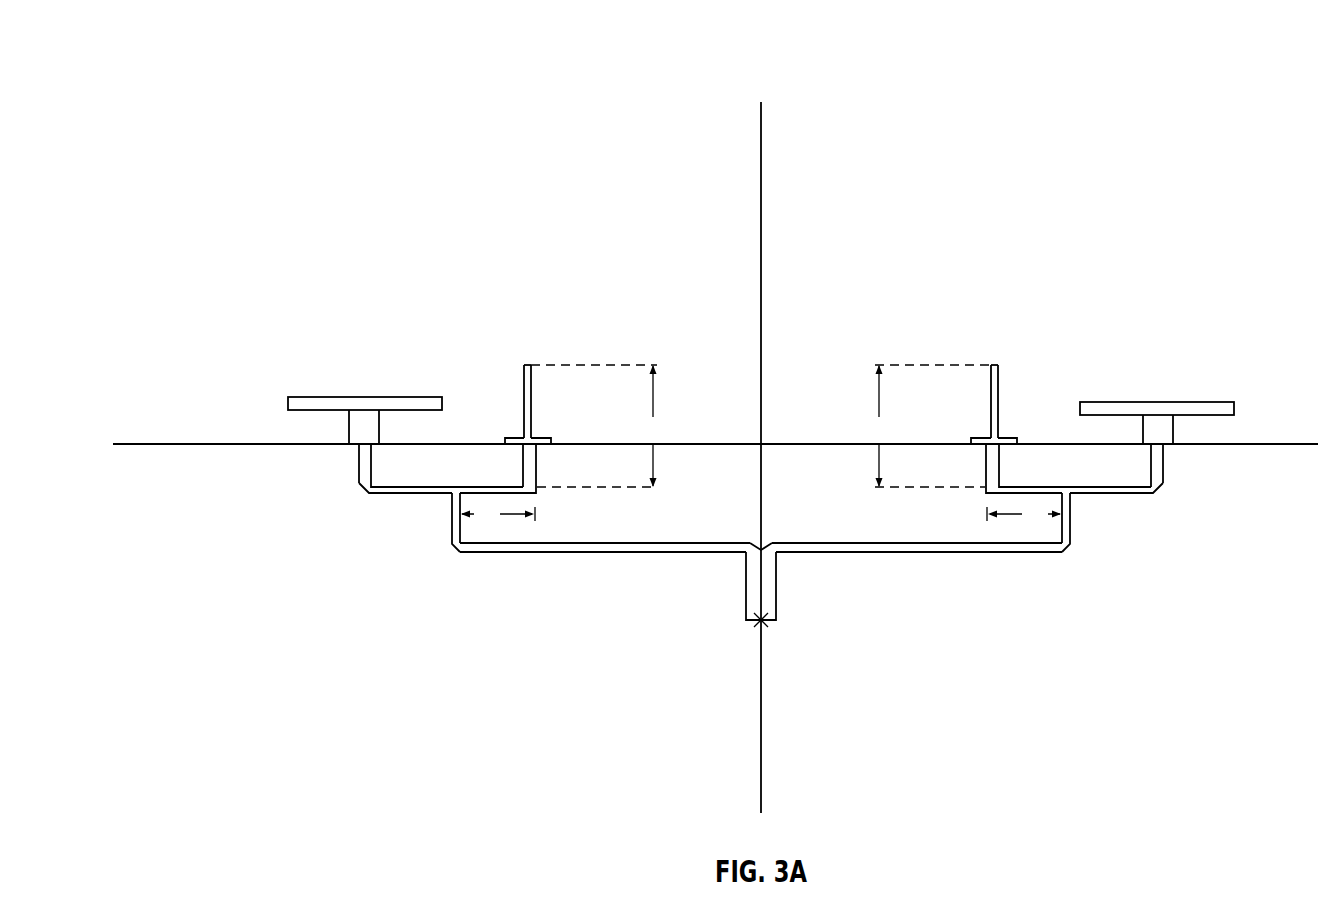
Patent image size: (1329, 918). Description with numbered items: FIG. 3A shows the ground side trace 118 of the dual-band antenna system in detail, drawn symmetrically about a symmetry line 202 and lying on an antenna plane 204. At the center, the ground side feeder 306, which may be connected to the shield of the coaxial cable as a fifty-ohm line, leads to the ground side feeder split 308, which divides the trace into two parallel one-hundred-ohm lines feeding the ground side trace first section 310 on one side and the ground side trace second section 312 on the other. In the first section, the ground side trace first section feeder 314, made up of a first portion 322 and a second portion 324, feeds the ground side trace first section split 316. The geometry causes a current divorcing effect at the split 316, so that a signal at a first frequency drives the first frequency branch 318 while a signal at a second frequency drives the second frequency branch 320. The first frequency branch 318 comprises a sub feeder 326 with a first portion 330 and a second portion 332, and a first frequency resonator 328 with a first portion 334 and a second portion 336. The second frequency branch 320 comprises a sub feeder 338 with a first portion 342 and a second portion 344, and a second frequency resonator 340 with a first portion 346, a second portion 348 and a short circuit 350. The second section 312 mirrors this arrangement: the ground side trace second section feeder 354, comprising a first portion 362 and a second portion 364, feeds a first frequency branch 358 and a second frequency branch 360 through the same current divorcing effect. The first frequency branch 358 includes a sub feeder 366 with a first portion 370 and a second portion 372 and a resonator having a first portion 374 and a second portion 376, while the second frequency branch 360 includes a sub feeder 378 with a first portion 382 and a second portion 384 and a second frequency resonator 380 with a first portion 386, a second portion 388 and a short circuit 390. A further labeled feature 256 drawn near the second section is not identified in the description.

The ground side trace 118 is at (746, 78).
The symmetry line 202 is at (763, 120).
The antenna plane 204 is at (152, 446).
The cavity interior 256 is at (1062, 483).
The ground side feeder 306 is at (776, 602).
The ground side feeder split 308 is at (765, 545).
The ground side trace first section 310 is at (233, 138).
The ground side trace second section 312 is at (1255, 98).
The ground side trace first section feeder 314 is at (596, 590).
The ground side trace first section split 316 is at (466, 480).
The ground side trace first section first frequency branch 318 is at (315, 355).
The ground side trace first section second frequency branch 320 is at (648, 344).
The ground side trace first section feeder first portion 322 is at (722, 553).
The ground side trace first section feeder second portion 324 is at (452, 548).
The ground side trace first section first frequency branch sub feeder 326 is at (347, 513).
The ground side trace first section first frequency resonator 328 is at (440, 340).
The ground side trace first section first frequency branch sub feeder first portion 330 is at (385, 497).
The ground side trace first section first frequency branch sub feeder second portion 332 is at (359, 470).
The ground side trace first section first frequency resonator first portion 334 is at (300, 397).
The ground side trace first section first frequency resonator second portion 336 is at (349, 425).
The ground side trace first section second frequency branch sub feeder 338 is at (529, 495).
The ground side trace first section second frequency resonator 340 is at (563, 394).
The ground side trace first section second frequency branch sub feeder first portion 342 is at (520, 495).
The ground side trace first section second frequency branch sub feeder second portio 344 is at (537, 475).
The ground side trace first section second frequency resonator first portion 346 is at (523, 385).
The ground side trace first section second frequency resonator second portion 348 is at (516, 437).
The ground side trace first section second frequency resonator short circuit 350 is at (527, 365).
The ground side trace second section feeder 354 is at (876, 618).
The ground side trace second section first frequency branch 358 is at (1231, 357).
The ground side trace second section second frequency branch 360 is at (857, 332).
The ground side trace second section feeder first portion 362 is at (890, 552).
The ground side trace second section feeder second portion 364 is at (1072, 530).
The ground side trace second section first frequency branch sub feeder 366 is at (1175, 508).
The ground side trace second section first frequency branch sub feeder first portion 370 is at (1140, 497).
The ground side trace second section first frequency branch sub feeder second portio 372 is at (1163, 458).
The ground side trace second section first frequency resonator first portion 374 is at (1216, 402).
The ground side trace second section first frequency resonator second portion 376 is at (1173, 427).
The ground side trace second section second frequency branch sub feeder 378 is at (1047, 536).
The ground side trace second section second frequency resonator 380 is at (1018, 356).
The ground side trace second section second frequency branch sub feeder first portio 382 is at (1005, 495).
The ground side trace second section second frequency branch sub feeder second porti 384 is at (985, 478).
The ground side trace second section second frequency resonator first portion 386 is at (990, 395).
The ground side trace second section second frequency resonator second portion 388 is at (985, 437).
The ground side trace second section second frequency resonator short circuit 390 is at (994, 365).